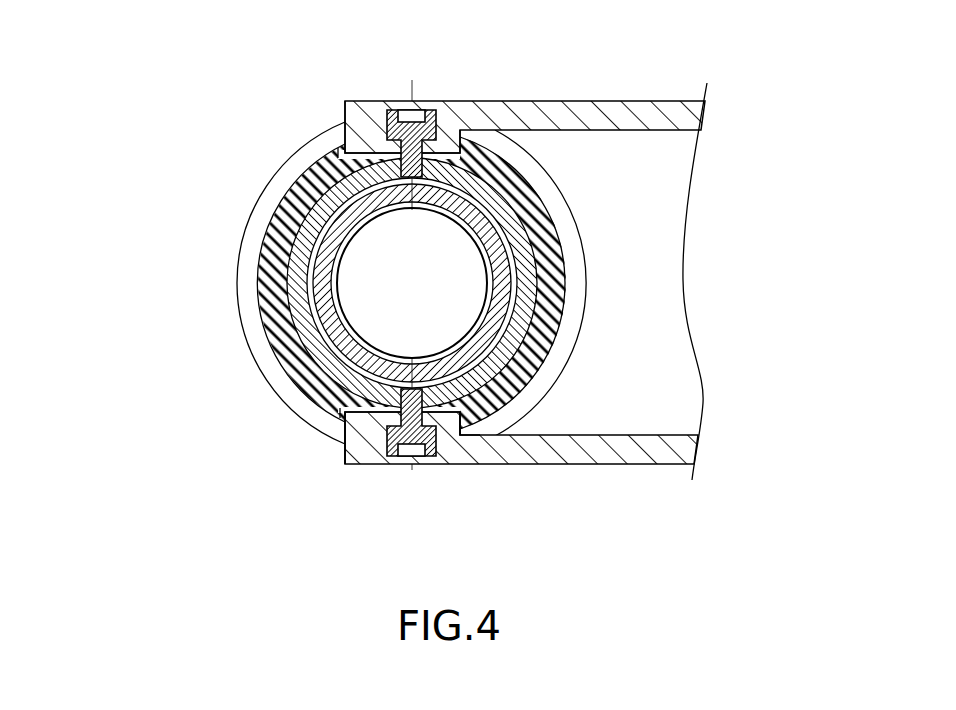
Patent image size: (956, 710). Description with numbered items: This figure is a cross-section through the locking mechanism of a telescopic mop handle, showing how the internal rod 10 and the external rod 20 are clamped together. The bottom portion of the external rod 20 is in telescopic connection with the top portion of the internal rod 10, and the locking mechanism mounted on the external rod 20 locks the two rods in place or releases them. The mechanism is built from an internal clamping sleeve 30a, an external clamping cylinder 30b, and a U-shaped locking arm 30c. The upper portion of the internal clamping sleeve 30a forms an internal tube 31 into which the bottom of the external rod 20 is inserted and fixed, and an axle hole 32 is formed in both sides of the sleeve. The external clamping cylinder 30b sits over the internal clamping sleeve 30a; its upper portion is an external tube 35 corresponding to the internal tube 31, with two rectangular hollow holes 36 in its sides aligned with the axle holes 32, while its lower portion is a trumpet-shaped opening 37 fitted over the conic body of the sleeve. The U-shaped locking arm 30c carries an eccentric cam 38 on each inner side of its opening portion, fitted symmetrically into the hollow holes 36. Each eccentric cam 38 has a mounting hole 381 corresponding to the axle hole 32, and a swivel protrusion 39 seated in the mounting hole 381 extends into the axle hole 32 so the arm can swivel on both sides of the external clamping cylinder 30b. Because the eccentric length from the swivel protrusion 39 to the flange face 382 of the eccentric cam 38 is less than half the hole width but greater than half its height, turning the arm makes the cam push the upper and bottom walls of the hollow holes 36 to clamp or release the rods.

The internal rod 10 is at (485, 242).
The external rod 20 is at (463, 198).
The internal clamping sleeve 30a is at (284, 311).
The external clamping cylinder 30b is at (229, 268).
The U-shaped locking arm 30c is at (612, 108).
The internal tube 31 is at (315, 350).
The axle hole 32 is at (500, 433).
The external tube 35 is at (313, 218).
The hollow hole 36 is at (357, 146).
The trumpet-shaped opening 37 is at (254, 240).
The eccentric cam 38 is at (370, 440).
The swivel protrusion 39 is at (478, 428).
The mounting hole 381 is at (428, 456).
The flange face 382 is at (344, 448).